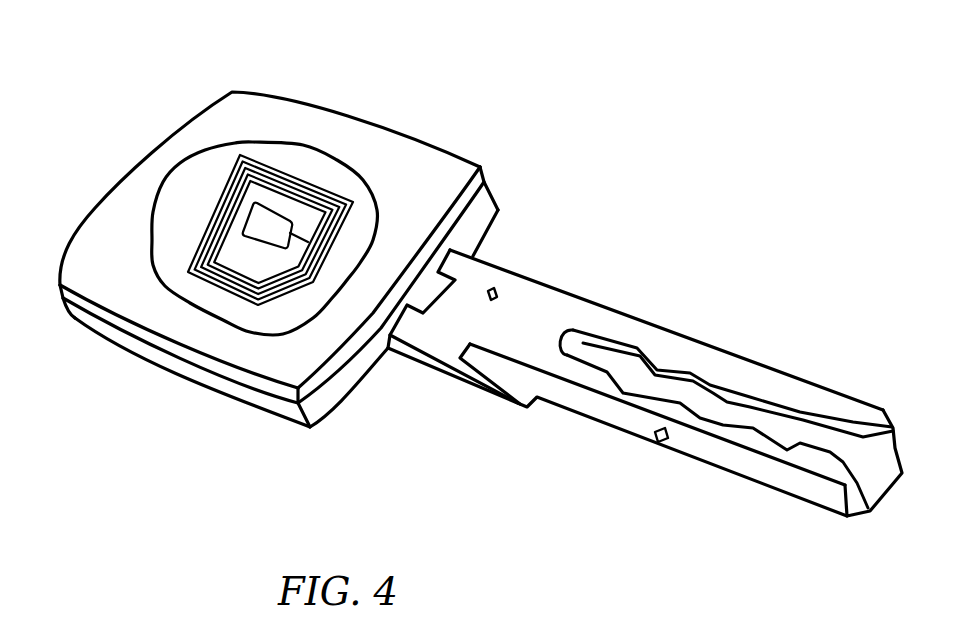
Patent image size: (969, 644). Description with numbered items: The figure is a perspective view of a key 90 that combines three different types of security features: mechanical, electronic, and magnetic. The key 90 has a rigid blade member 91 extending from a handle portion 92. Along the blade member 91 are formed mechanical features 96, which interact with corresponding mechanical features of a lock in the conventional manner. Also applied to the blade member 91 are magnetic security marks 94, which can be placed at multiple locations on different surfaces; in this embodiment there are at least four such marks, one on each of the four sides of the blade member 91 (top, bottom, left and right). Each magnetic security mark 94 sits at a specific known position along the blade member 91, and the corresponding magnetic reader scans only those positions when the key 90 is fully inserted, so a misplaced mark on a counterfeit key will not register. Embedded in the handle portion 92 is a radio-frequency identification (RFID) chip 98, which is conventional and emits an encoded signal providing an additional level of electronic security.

The key 90 is at (226, 91).
The rigid blade member 91 is at (545, 285).
The handle portion 92 is at (90, 207).
The magnetic security marks 94 is at (490, 298).
The mechanical features 96 is at (700, 372).
The radio-frequency identification (RFID) chip 98 is at (301, 183).